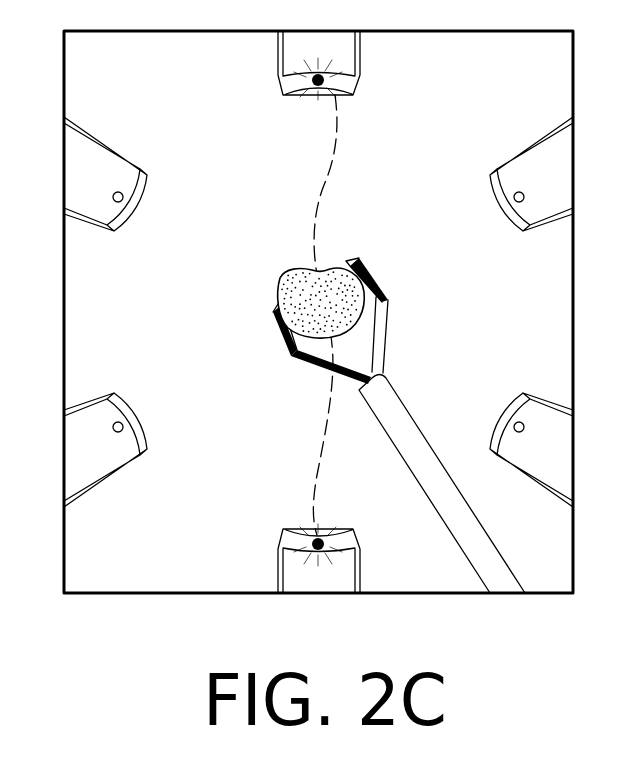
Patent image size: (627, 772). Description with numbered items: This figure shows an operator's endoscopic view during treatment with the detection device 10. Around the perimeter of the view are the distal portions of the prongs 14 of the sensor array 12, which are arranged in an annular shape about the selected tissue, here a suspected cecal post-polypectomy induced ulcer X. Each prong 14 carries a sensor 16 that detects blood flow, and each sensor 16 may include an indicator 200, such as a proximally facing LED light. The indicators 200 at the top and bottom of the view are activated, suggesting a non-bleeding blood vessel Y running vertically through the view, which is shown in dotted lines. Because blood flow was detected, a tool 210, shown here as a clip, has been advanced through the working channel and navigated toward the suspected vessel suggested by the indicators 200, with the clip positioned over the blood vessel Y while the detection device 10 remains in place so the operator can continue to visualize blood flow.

The detection device 10 is at (149, 508).
The sensor array 12 is at (469, 151).
The prong 14 is at (107, 138).
The sensor 16 is at (123, 197).
The indicator 200 is at (310, 90).
The tool 210 is at (386, 329).
The suspected cecal post-polypectomy induced ulcer X is at (280, 283).
The blood vessel Y is at (323, 185).